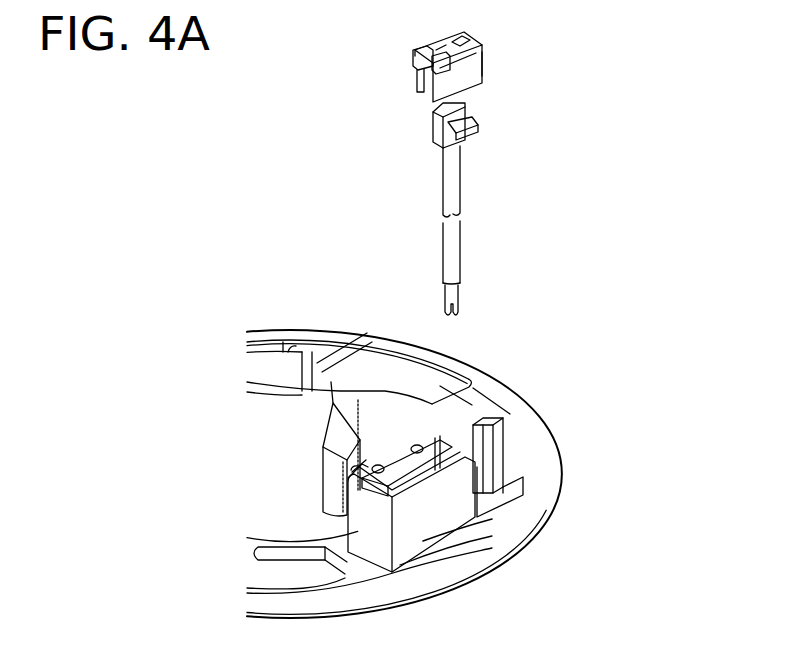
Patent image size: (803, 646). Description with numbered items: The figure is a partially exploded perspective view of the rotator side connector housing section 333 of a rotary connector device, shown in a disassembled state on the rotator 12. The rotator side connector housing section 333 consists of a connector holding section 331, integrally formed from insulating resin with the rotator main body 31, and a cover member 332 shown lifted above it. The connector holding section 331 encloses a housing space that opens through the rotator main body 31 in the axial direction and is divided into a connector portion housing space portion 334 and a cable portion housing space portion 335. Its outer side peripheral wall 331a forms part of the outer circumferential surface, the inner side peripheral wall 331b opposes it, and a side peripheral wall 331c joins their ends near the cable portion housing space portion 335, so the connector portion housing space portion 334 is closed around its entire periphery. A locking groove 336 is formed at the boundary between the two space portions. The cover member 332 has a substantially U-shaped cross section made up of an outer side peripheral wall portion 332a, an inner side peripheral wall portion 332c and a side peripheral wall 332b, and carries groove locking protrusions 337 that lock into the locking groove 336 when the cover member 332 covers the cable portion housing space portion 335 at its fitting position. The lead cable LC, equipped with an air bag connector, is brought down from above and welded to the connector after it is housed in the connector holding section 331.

The rotator 12 is at (642, 96).
The rotator main body 31 is at (507, 398).
The connector holding section 331 is at (572, 548).
The outer side peripheral wall 331a is at (435, 527).
The inner side peripheral wall 331b is at (332, 432).
The side peripheral wall 331c is at (497, 505).
The cover member 332 is at (496, 53).
The outer side peripheral wall portion 332a is at (462, 82).
The side peripheral wall 332b is at (484, 67).
The inner side peripheral wall portion 332c is at (432, 47).
The rotator side connector housing section 333 is at (392, 436).
The connector portion housing space portion 334 is at (345, 505).
The cable portion housing space portion 335 is at (505, 460).
The locking groove 336 is at (520, 482).
The groove locking protrusion 337 is at (416, 57).
The lead cable LC is at (463, 187).